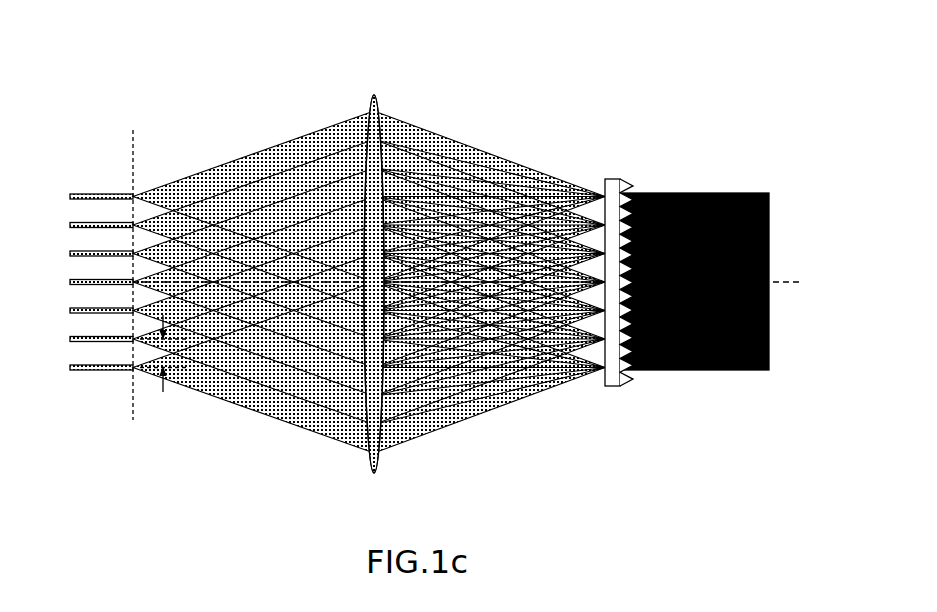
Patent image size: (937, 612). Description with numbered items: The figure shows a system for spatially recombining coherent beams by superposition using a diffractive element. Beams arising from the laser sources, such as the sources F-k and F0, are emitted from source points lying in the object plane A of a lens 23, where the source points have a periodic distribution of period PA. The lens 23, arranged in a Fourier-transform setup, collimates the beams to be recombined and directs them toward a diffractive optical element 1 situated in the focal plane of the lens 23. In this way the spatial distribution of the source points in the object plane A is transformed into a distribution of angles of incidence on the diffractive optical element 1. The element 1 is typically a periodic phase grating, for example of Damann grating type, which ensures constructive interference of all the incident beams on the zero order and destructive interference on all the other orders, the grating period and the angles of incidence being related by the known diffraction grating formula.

The lens 23 is at (374, 94).
The diffractive optical element 1 is at (612, 178).
The laser source F-k is at (84, 225).
The laser source F0 is at (84, 285).
The object plane A is at (117, 288).
The period PA is at (163, 369).